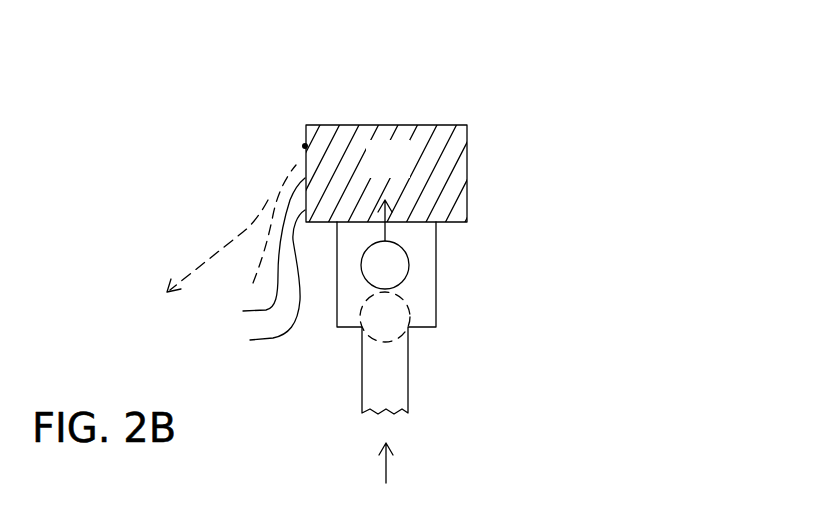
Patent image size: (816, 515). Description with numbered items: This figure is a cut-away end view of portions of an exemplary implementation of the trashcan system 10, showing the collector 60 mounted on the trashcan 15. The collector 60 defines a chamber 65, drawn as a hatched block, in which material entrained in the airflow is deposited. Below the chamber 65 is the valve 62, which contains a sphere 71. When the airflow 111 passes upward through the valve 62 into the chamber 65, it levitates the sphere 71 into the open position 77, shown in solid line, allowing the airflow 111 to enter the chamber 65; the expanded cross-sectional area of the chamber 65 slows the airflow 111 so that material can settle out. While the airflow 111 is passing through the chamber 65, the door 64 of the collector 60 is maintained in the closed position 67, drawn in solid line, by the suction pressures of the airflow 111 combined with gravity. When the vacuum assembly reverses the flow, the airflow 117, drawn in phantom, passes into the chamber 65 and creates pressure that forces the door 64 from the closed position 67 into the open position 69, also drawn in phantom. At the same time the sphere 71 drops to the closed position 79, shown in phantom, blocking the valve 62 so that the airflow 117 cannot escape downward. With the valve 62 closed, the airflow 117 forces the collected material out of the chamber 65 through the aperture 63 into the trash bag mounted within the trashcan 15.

The trashcan system 10 is at (605, 48).
The trashcan 15 is at (622, 105).
The collector 60 is at (467, 132).
The chamber 65 is at (403, 170).
The valve 62 is at (430, 278).
The sphere 71 is at (392, 253).
The open position 77 is at (402, 265).
The airflow 111 is at (393, 219).
The open position 69 is at (297, 170).
The door 64 is at (273, 198).
The aperture 63 is at (247, 284).
The closed position 67 is at (262, 281).
The airflow 117 is at (215, 256).
The closed position 79 is at (362, 337).